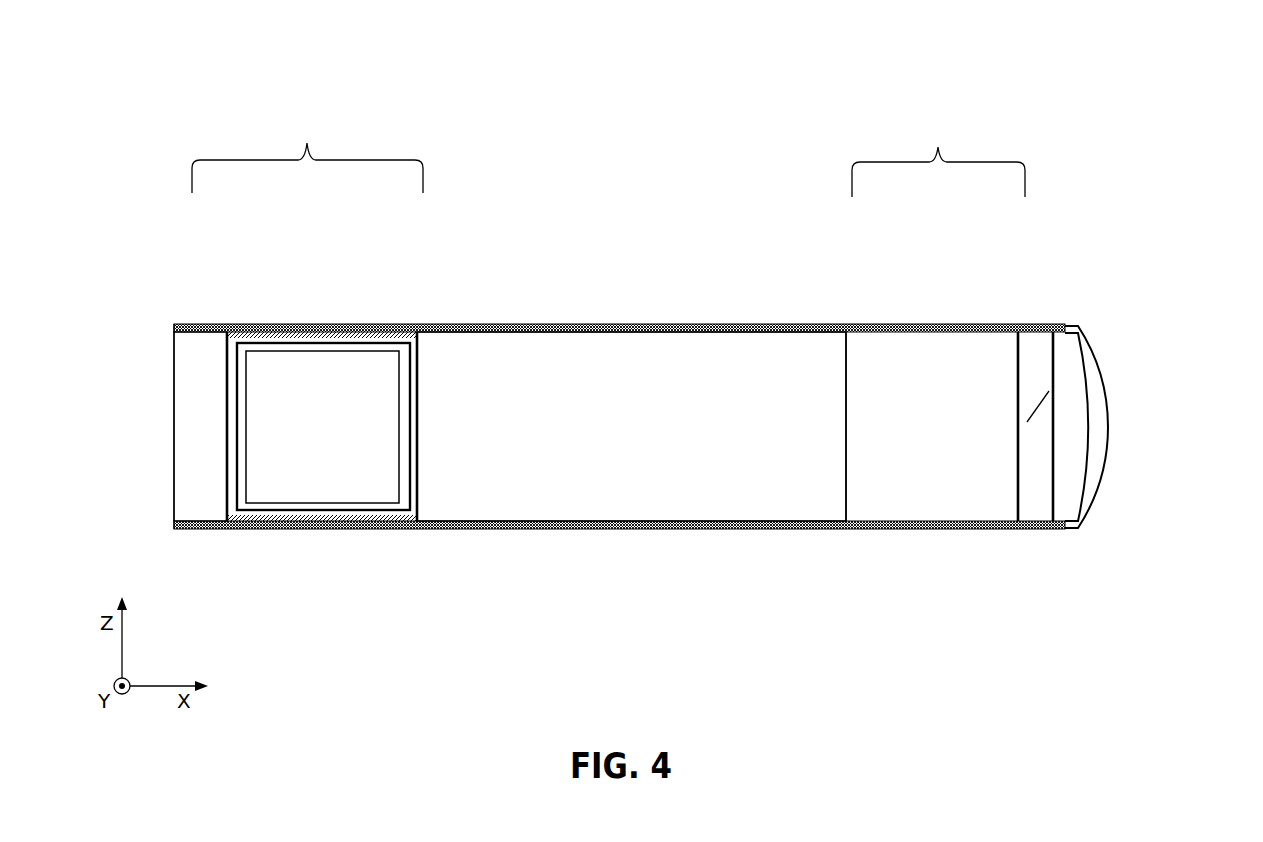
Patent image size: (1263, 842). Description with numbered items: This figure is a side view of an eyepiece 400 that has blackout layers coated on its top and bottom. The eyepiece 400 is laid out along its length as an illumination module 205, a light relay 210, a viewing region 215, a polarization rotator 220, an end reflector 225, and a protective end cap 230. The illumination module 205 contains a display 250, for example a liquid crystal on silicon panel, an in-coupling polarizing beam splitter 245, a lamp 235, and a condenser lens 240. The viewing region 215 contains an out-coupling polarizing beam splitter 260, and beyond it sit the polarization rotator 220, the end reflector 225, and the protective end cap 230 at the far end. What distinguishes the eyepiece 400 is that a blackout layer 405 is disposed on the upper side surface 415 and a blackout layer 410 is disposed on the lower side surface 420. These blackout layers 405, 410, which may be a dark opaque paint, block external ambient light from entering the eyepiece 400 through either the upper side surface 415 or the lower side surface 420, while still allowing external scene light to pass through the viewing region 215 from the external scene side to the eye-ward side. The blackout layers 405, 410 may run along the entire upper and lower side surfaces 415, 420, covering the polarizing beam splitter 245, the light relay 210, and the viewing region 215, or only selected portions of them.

The eyepiece 400 is at (198, 77).
The illumination module 205 is at (313, 153).
The viewing region 215 is at (947, 155).
The blackout layer 405 is at (659, 326).
The blackout layer 410 is at (560, 531).
The upper side surface 415 is at (633, 210).
The lower side surface 420 is at (672, 622).
The display 250 is at (188, 473).
The in-coupling polarizing beam splitter 245 is at (229, 402).
The condenser lens 240 is at (376, 347).
The lamp 235 is at (363, 436).
The light relay 210 is at (672, 456).
The out-coupling polarizing beam splitter 260 is at (967, 436).
The polarization rotator 220 is at (1034, 342).
The protective end cap 230 is at (1092, 373).
The end reflector 225 is at (1065, 483).